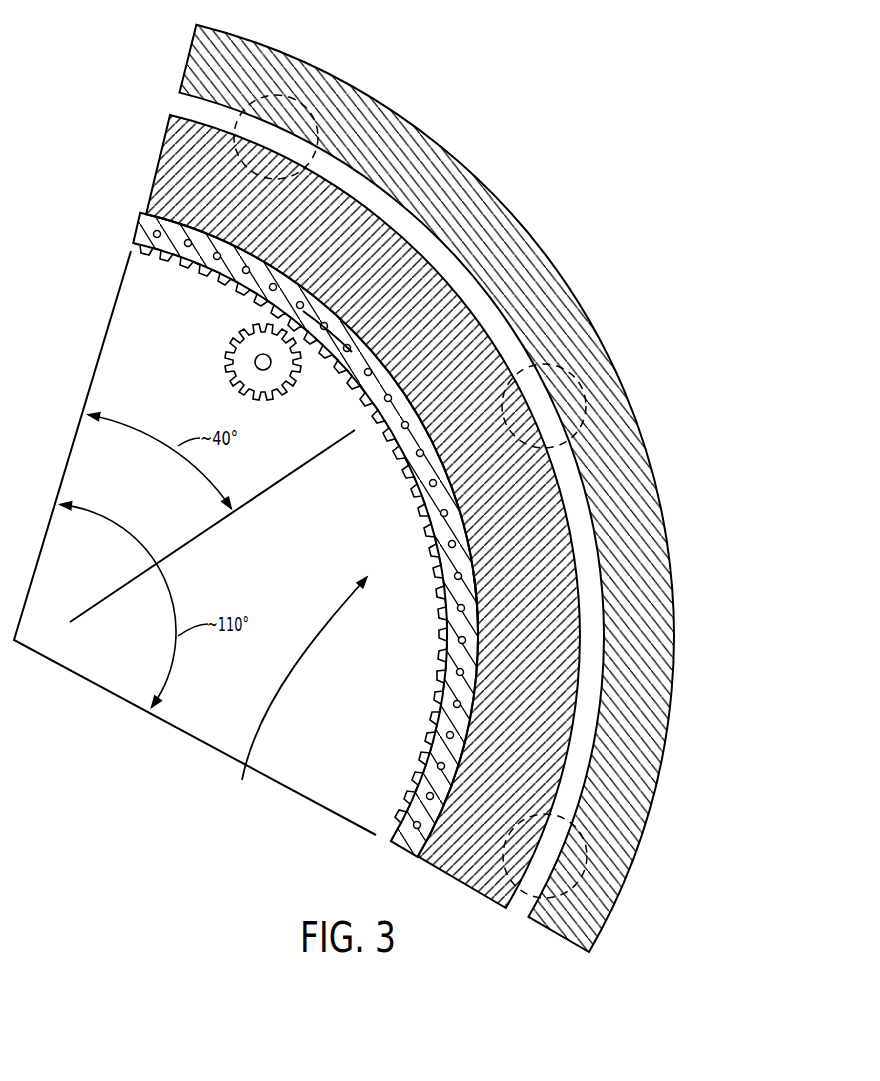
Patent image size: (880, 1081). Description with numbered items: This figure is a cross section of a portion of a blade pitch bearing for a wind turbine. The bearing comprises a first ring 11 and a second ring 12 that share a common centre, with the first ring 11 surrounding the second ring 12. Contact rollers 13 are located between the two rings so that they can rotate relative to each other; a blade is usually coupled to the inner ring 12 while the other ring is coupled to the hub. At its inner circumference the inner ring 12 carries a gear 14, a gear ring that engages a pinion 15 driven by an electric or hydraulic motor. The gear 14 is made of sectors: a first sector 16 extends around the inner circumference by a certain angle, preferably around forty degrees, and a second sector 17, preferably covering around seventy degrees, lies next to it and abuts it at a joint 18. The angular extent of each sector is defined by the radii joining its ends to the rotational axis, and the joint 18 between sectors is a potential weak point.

The first ring 11 is at (242, 50).
The second ring 12 is at (293, 213).
The contact rollers 13 is at (283, 110).
The gear 14 is at (300, 692).
The pinion 15 is at (257, 354).
The first sector 16 is at (323, 317).
The second sector 17 is at (465, 590).
The joint 18 is at (372, 416).